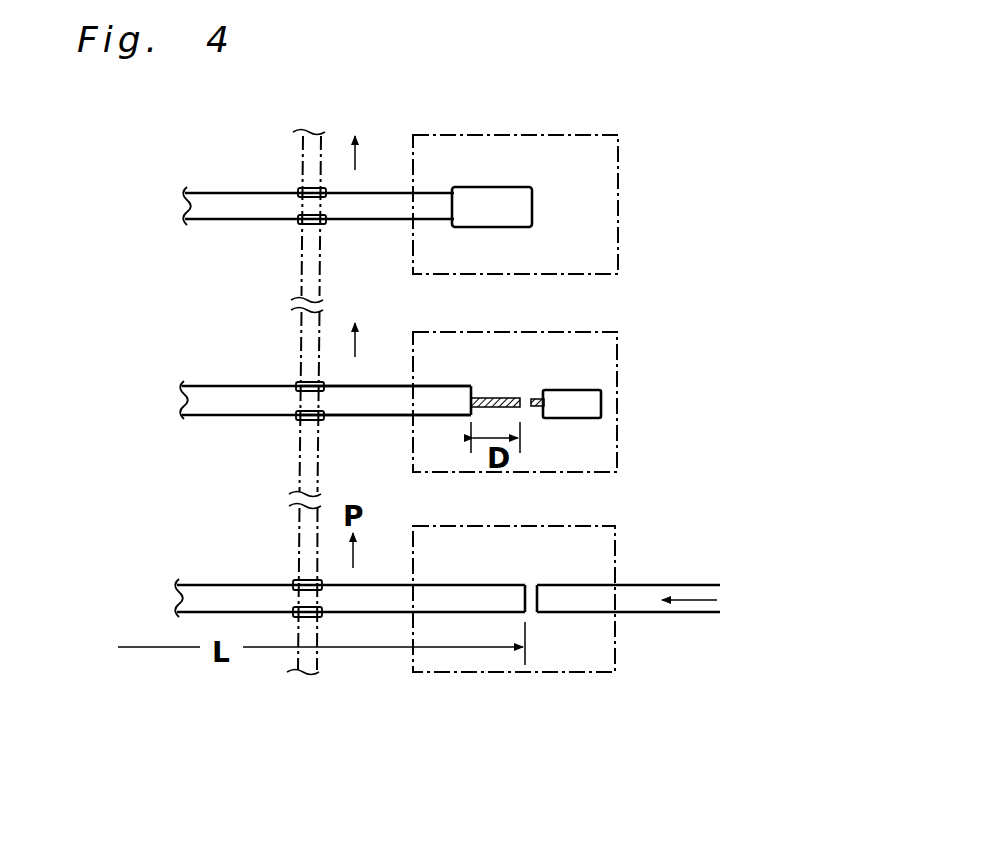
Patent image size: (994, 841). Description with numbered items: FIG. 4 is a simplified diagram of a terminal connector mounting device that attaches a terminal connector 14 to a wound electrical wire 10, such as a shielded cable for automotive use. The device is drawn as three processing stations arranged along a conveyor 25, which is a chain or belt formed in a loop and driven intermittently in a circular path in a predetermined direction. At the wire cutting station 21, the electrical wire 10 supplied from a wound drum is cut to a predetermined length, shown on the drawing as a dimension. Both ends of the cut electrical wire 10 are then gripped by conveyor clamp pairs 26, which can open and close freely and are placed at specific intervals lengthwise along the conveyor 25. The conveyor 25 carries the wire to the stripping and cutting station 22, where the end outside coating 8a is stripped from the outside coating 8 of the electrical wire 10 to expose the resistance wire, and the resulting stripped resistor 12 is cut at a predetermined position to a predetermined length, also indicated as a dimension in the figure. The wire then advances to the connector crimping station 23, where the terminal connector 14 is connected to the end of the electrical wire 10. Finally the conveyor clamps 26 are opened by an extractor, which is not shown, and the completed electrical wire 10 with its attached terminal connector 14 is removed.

The electrical wire 10 is at (211, 189).
The conveyor clamp pairs 26 is at (311, 191).
The conveyor 25 is at (296, 446).
The outside coating 8 is at (382, 408).
The terminal connector 14 is at (512, 199).
The connector crimping station 23 is at (622, 237).
The stripped resistor 12 is at (498, 398).
The end outside coating 8a is at (594, 404).
The stripping and cutting station 22 is at (619, 449).
The wire cutting station 21 is at (619, 635).